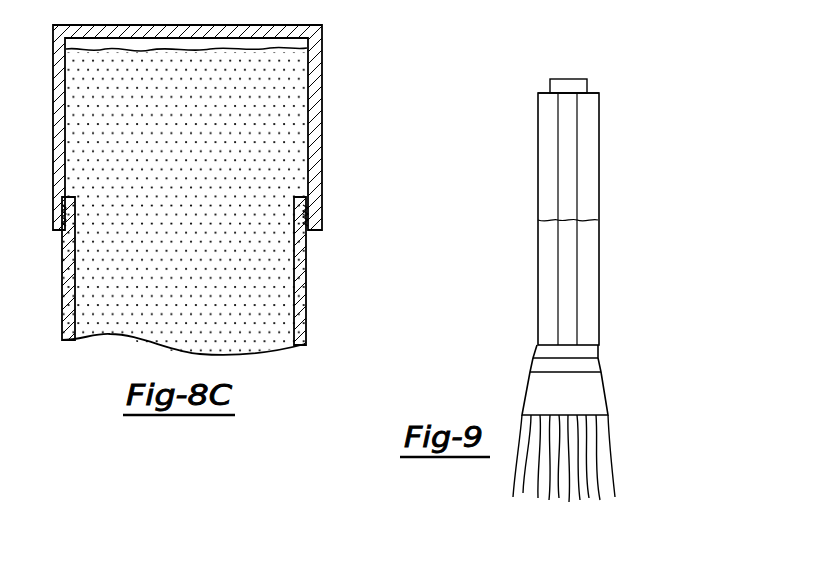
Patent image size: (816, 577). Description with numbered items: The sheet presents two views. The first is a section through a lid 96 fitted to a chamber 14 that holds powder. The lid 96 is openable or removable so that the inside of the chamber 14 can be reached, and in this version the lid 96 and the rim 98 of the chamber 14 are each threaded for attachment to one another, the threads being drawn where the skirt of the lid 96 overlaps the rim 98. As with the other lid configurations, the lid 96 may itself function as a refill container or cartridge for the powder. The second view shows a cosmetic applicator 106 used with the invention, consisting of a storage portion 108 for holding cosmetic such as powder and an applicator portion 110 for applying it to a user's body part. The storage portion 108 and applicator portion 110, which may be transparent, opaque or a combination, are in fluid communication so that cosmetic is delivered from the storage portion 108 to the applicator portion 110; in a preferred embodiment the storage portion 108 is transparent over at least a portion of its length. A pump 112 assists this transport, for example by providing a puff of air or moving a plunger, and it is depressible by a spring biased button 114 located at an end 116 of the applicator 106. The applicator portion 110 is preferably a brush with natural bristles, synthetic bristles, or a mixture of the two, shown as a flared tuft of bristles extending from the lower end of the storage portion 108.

In FIG. 8C, the lid 96 is at (310, 108).
In FIG. 8C, the rim 98 is at (303, 212).
In FIG. 8C, the chamber 14 is at (300, 303).
In FIG. 9, the applicator brush 106 is at (600, 190).
In FIG. 9, the storage portion 108 is at (587, 288).
In FIG. 9, the applicator portion 110 is at (612, 470).
In FIG. 9, the pump 112 is at (570, 135).
In FIG. 9, the spring biased button 114 is at (569, 78).
In FIG. 9, the end 116 is at (538, 92).